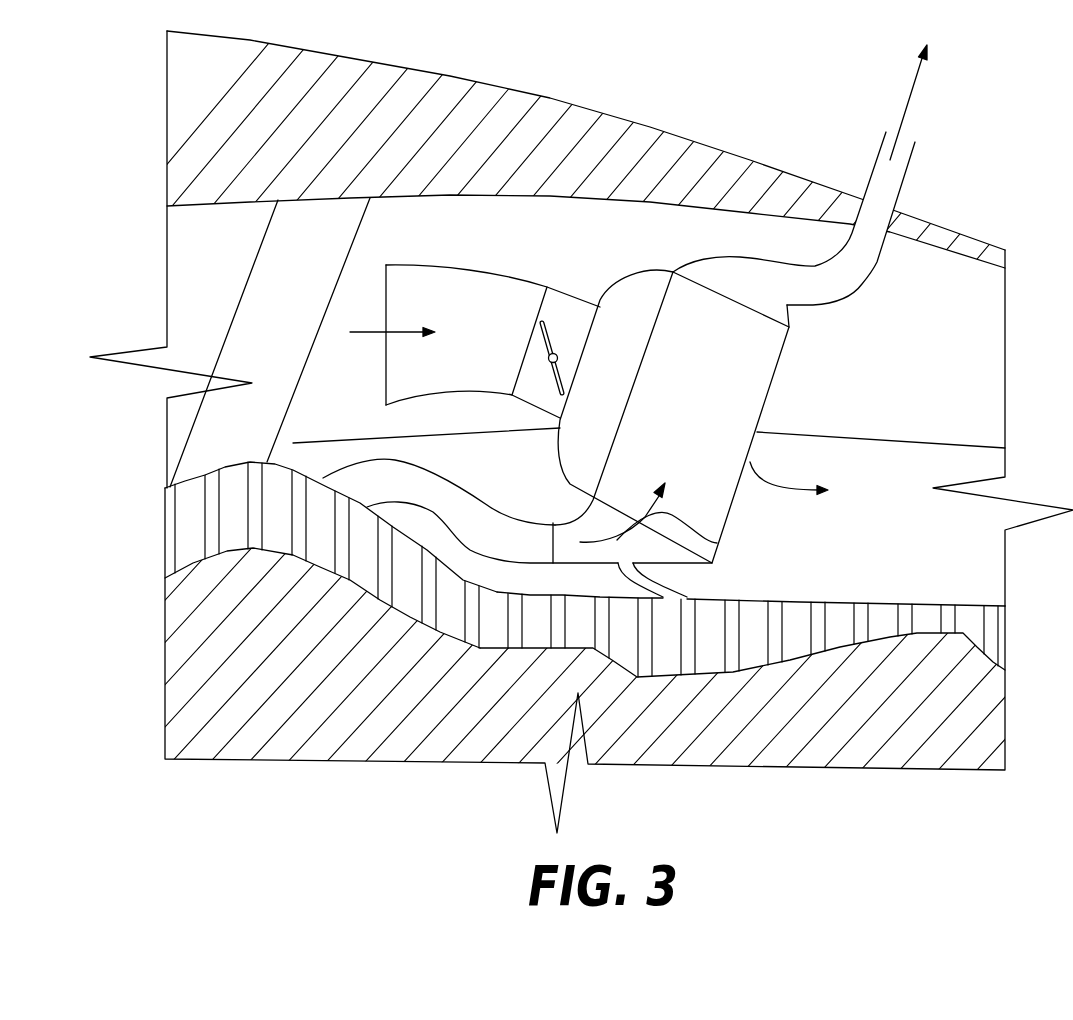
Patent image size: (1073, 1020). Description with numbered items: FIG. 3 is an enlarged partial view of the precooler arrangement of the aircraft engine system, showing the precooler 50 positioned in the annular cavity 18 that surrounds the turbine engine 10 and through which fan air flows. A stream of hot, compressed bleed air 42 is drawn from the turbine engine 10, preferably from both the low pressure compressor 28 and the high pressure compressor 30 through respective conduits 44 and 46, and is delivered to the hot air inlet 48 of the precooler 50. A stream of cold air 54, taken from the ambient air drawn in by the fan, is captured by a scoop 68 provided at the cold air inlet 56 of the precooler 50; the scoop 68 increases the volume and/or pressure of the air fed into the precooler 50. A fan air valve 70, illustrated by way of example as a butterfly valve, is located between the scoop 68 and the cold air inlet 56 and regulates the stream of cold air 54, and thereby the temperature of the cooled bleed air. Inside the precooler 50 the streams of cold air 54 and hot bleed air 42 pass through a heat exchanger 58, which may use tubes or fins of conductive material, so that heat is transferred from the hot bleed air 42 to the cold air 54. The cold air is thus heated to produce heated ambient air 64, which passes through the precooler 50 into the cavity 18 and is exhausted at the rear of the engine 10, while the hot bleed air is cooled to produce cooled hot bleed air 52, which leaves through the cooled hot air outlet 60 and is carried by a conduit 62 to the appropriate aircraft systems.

The aircraft turbine engine 10 is at (930, 755).
The annular cavity 18 is at (476, 244).
The low pressure compressor 28 is at (315, 548).
The high pressure compressor 30 is at (698, 665).
The hot bleed air 42 is at (580, 542).
The conduit 44 is at (466, 537).
The conduit 46 is at (623, 592).
The hot air inlet 48 is at (717, 543).
The precooler 50 is at (678, 405).
The cooled hot bleed air 52 is at (823, 186).
The cold air 54 is at (350, 335).
The cold air inlet 56 is at (577, 367).
The heat exchanger 58 is at (770, 360).
The cooled hot air outlet 60 is at (713, 290).
The conduit 62 is at (875, 260).
The heated ambient air 64 is at (790, 495).
The scoop 68 is at (405, 287).
The fan air valve 70 is at (533, 397).